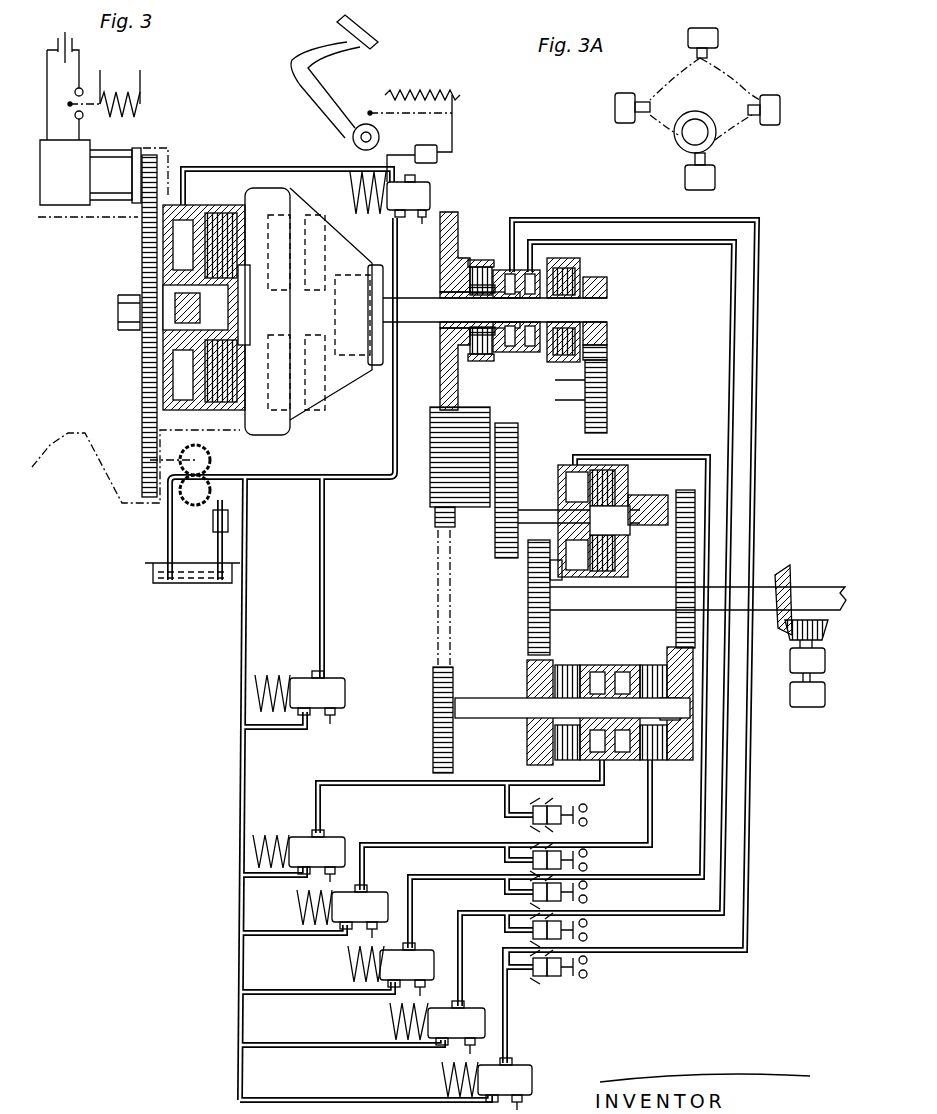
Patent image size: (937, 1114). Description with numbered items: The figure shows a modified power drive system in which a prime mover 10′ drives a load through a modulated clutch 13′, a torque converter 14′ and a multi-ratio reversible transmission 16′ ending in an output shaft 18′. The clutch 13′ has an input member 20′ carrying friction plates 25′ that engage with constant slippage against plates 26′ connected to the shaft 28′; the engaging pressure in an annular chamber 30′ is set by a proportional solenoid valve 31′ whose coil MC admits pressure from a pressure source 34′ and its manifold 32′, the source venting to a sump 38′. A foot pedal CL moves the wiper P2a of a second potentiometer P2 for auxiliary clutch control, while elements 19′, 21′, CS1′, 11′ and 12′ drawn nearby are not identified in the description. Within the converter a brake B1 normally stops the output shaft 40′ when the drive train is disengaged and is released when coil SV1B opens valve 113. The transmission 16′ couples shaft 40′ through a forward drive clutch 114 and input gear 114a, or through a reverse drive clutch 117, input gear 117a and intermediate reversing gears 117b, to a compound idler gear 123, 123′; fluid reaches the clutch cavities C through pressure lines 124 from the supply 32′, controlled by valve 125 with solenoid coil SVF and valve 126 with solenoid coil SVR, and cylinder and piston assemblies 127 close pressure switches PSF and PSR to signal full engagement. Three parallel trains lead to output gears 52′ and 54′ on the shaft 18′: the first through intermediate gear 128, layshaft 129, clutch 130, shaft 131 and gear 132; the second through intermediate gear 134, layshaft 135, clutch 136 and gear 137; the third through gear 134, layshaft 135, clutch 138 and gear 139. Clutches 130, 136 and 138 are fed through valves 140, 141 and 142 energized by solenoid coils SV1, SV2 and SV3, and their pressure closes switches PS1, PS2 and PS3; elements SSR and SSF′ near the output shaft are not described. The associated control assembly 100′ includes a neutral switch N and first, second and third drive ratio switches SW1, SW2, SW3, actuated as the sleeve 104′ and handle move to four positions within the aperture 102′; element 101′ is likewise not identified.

In FIG. 3, the battery 19′ is at (76, 38).
In FIG. 3, the ignition switch contacts 21′ is at (92, 118).
In FIG. 3, the clutch switch solenoid CS1′ is at (125, 95).
In FIG. 3, the engine 11′ is at (70, 200).
In FIG. 3, the input member 20′ is at (140, 268).
In FIG. 3, the clutch 13′ is at (218, 212).
In FIG. 3, the annular chamber 30′ is at (172, 388).
In FIG. 3, the engine output shaft 12′ is at (130, 332).
In FIG. 3, the plates 26′ is at (248, 240).
In FIG. 3, the friction plates 25′ is at (235, 395).
In FIG. 3, the torque converter 14′ is at (330, 197).
In FIG. 3, the shaft 28′ is at (344, 297).
In FIG. 3, the brake B1 is at (340, 386).
In FIG. 3, the output shaft 40′ is at (398, 312).
In FIG. 3, the proportional solenoid valve 31′ is at (432, 190).
In FIG. 3, the coil MC is at (392, 138).
In FIG. 3, the second potentiometer P2 is at (430, 90).
In FIG. 3, the wiper P2a is at (455, 110).
In FIG. 3, the foot pedal CL is at (325, 36).
In FIG. 3, the prime mover 10′ is at (30, 470).
In FIG. 3, the pressure source 34′ is at (236, 455).
In FIG. 3, the sump 38′ is at (195, 583).
In FIG. 3, the pressurized fluid supply 32′ is at (238, 648).
In FIG. 3, the input gear 114a is at (460, 225).
In FIG. 3, the forward drive clutch 114 is at (486, 252).
In FIG. 3, the cavities C is at (512, 352).
In FIG. 3, the reverse drive clutch 117 is at (588, 268).
In FIG. 3, the input gear 117a is at (610, 282).
In FIG. 3, the intermediate reversing gears 117b is at (585, 420).
In FIG. 3, the pressure lines 124 is at (733, 330).
In FIG. 3, the transmission 16′ is at (760, 420).
In FIG. 3, the compound idler gear 123 is at (445, 480).
In FIG. 3, the idler gear 123′ is at (520, 442).
In FIG. 3, the intermediate gear 134 is at (435, 516).
In FIG. 3, the intermediate gear 128 is at (518, 535).
In FIG. 3, the layshaft 129 is at (530, 525).
In FIG. 3, the clutch 130 is at (620, 470).
In FIG. 3, the shaft 131 is at (652, 512).
In FIG. 3, the gear 132 is at (686, 490).
In FIG. 3, the output gear 52′ is at (528, 610).
In FIG. 3, the output gear 54′ is at (676, 622).
In FIG. 3, the gear 137 is at (672, 655).
In FIG. 3, the gear 139 is at (528, 670).
In FIG. 3, the clutch 138 is at (590, 650).
In FIG. 3, the clutch 136 is at (648, 790).
In FIG. 3, the layshaft 135 is at (488, 692).
In FIG. 3, the output shaft 18′ is at (828, 590).
In FIG. 3, the speed sensor SSR is at (800, 664).
In FIG. 3, the speed sensor SSF′ is at (790, 700).
In FIG. 3, the valve 113 is at (340, 680).
In FIG. 3, the coil SV1B is at (280, 672).
In FIG. 3, the valve 142 is at (338, 840).
In FIG. 3, the solenoid coil SV3 is at (277, 835).
In FIG. 3, the valve 141 is at (378, 895).
In FIG. 3, the solenoid coil SV2 is at (300, 905).
In FIG. 3, the valve 140 is at (423, 953).
In FIG. 3, the solenoid coil SV1 is at (350, 963).
In FIG. 3, the valve 126 is at (490, 1025).
In FIG. 3, the solenoid coil SVR is at (392, 1022).
In FIG. 3, the valve 125 is at (505, 1070).
In FIG. 3, the solenoid coil SVF is at (442, 1080).
In FIG. 3, the pressure switch PS3 is at (620, 820).
In FIG. 3, the pressure switch PS2 is at (615, 862).
In FIG. 3, the pressure switch PS1 is at (610, 893).
In FIG. 3, the pressure switch PSR is at (615, 931).
In FIG. 3, the pressure switch PSF is at (615, 972).
In FIG. 3, the cylinder and piston assemblies 127 is at (580, 1002).
In FIG. 3A, the control assembly 100′ is at (832, 45).
In FIG. 3A, the aperture 102′ is at (795, 84).
In FIG. 3A, the second drive ratio switch SW2 is at (715, 34).
In FIG. 3A, the first drive ratio switch SW1 is at (625, 122).
In FIG. 3A, the third drive ratio switch SW3 is at (780, 100).
In FIG. 3A, the sleeve 104′ is at (713, 140).
In FIG. 3A, the shift lever 101′ is at (716, 145).
In FIG. 3A, the neutral switch N is at (715, 178).